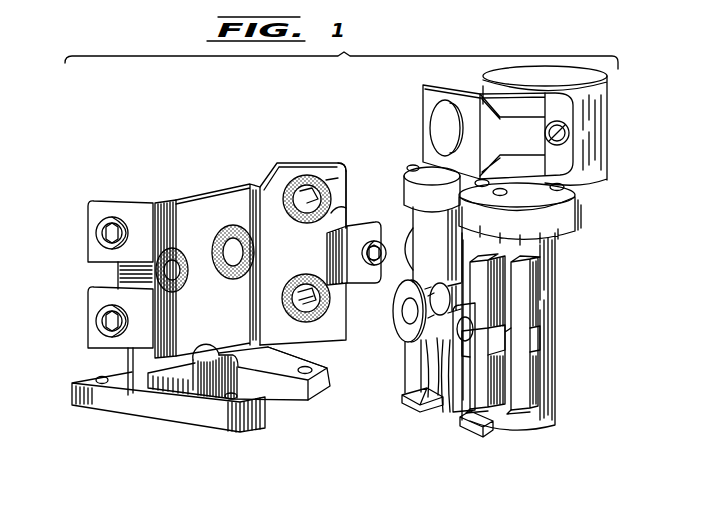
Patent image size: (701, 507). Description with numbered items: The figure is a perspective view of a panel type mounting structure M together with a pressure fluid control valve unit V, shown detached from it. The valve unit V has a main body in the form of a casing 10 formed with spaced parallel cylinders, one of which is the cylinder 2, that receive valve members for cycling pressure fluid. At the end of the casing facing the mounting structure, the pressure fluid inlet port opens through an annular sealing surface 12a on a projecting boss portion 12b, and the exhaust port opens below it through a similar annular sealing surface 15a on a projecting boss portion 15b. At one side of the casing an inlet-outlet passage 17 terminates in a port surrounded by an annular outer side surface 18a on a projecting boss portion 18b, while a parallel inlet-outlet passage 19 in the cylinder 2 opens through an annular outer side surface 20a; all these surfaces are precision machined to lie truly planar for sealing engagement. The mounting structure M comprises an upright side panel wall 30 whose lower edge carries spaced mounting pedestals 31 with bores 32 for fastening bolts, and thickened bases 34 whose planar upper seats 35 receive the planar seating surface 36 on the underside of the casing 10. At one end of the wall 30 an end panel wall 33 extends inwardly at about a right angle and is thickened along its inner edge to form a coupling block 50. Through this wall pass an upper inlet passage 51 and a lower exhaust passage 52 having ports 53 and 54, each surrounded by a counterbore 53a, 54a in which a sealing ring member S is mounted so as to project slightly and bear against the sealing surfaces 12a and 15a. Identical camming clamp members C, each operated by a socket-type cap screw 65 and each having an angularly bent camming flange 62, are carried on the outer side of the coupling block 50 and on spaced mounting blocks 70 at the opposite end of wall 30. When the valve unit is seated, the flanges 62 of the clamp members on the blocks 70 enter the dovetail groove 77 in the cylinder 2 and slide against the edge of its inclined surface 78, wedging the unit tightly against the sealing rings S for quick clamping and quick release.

The mounting structure M is at (197, 190).
The valve unit V is at (590, 287).
The clamping member C is at (90, 238).
The sealing ring member S is at (306, 196).
The cylinder 2 is at (548, 392).
The casing 10 is at (556, 362).
The annular sealing surface 12a is at (410, 233).
The projecting boss portion 12b is at (414, 262).
The annular sealing surface 15a is at (406, 356).
The projecting boss portion 15b is at (422, 362).
The inlet-outlet passage 17 is at (410, 312).
The annular outer side surface 18a is at (422, 396).
The projecting boss portion 18b is at (447, 368).
The inlet-outlet passage 19 is at (453, 412).
The annular outer side surface 20a is at (520, 219).
The side panel wall 30 is at (240, 186).
The mounting pedestal 31 is at (306, 401).
The bore 32 is at (100, 384).
The end panel wall 33 is at (343, 166).
The base 34 is at (163, 393).
The seat 35 is at (228, 340).
The seating surface 36 is at (470, 434).
The coupling block 50 is at (353, 186).
The passage 51 is at (305, 188).
The passage 52 is at (305, 290).
The port 53 is at (332, 180).
The counterbore 53a is at (334, 209).
The port 54 is at (306, 308).
The counterbore 54a is at (283, 357).
The camming flange 62 is at (170, 204).
The cap screw 65 is at (100, 225).
The mounting block 70 is at (576, 235).
The groove 77 is at (515, 377).
The inclined surface 78 is at (496, 297).